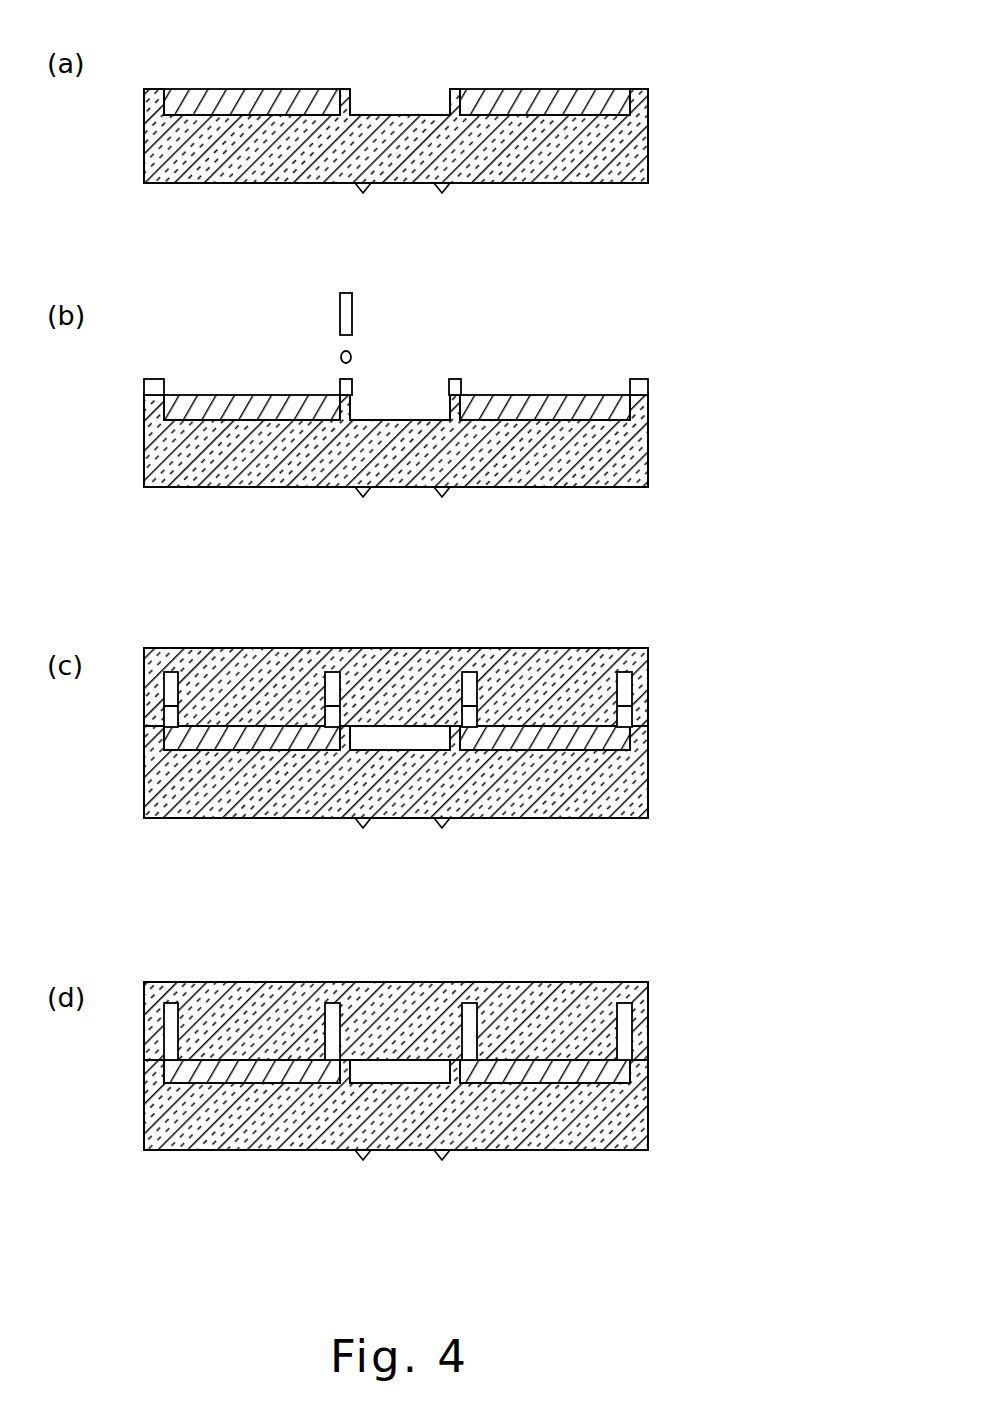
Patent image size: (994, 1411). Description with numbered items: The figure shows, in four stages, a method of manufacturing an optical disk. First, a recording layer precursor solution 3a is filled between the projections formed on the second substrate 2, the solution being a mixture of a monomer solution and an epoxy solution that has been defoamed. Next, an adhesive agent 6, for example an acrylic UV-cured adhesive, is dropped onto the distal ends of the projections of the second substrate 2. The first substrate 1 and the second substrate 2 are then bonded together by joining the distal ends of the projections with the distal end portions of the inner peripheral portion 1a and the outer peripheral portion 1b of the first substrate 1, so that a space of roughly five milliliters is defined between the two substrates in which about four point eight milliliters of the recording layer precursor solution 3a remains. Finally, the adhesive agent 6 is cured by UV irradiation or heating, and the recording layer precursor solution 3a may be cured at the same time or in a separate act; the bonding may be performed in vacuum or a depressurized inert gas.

The first substrate 1 is at (591, 668).
The inner peripheral portion 1a is at (398, 692).
The outer peripheral portion 1b is at (650, 688).
The second substrate 2 is at (636, 152).
The recording layer precursor solution 3a is at (605, 95).
The adhesive agent 6 is at (641, 381).